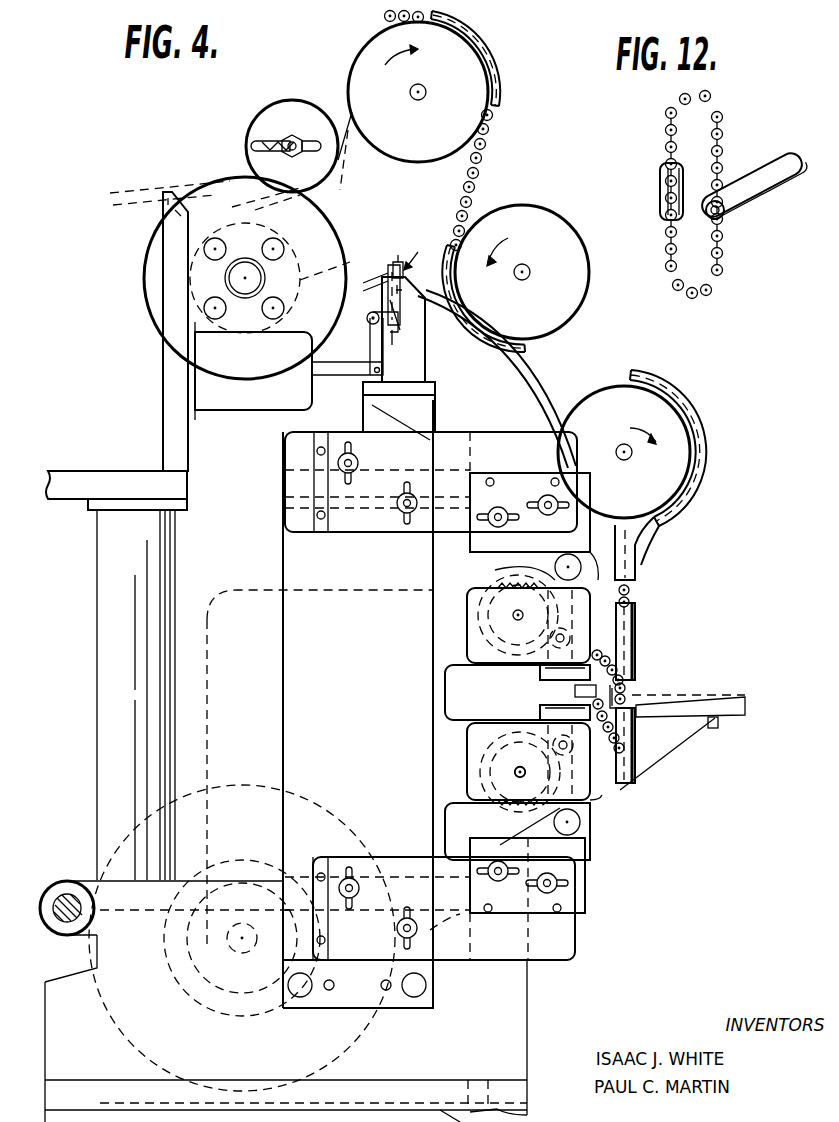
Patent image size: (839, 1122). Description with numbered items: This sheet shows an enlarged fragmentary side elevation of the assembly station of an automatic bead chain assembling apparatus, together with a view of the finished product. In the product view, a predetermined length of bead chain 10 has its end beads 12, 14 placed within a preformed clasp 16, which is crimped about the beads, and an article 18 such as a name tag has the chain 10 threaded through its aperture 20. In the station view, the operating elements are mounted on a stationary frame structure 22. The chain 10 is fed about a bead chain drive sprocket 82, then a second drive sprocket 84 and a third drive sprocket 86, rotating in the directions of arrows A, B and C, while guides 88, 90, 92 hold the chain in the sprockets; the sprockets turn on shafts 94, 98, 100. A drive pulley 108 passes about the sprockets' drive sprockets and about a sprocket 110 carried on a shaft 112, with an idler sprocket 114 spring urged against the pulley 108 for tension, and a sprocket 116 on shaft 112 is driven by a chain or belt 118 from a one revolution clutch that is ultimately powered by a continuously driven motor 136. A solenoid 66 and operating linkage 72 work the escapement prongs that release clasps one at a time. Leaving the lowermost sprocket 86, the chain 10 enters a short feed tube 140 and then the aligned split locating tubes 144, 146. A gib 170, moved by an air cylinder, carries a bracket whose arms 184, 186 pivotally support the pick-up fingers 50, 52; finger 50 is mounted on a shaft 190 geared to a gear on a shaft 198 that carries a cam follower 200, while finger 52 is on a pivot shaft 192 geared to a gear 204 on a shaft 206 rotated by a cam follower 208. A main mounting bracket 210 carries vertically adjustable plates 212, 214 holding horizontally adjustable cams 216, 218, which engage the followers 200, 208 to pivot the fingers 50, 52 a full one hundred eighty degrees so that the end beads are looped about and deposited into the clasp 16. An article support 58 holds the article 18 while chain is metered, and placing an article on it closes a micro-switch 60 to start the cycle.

In FIG. 4, the bead chain 10 is at (479, 166).
In FIG. 12, the bead chain 10 is at (722, 112).
In FIG. 12, the end bead 12 is at (660, 182).
In FIG. 12, the end bead 14 is at (660, 195).
In FIG. 12, the clasp 16 is at (684, 172).
In FIG. 4, the article 18 is at (690, 690).
In FIG. 12, the article 18 is at (762, 198).
In FIG. 12, the aperture 20 is at (720, 218).
In FIG. 4, the stationary frame structure 22 is at (100, 468).
In FIG. 4, the pick-up finger 50 is at (545, 680).
In FIG. 4, the pick-up finger 52 is at (545, 713).
In FIG. 4, the article support 58 is at (742, 718).
In FIG. 4, the micro-switch 60 is at (612, 742).
In FIG. 4, the solenoid 66 is at (248, 410).
In FIG. 4, the operating linkage 72 is at (387, 302).
In FIG. 4, the bead chain drive sprocket 82 is at (405, 162).
In FIG. 4, the second drive sprocket 84 is at (590, 306).
In FIG. 4, the third drive sprocket 86 is at (560, 408).
In FIG. 4, the guide 88 is at (500, 76).
In FIG. 4, the guide 90 is at (524, 348).
In FIG. 4, the guide 92 is at (701, 423).
In FIG. 4, the shaft 94 is at (413, 100).
In FIG. 4, the shaft 98 is at (524, 280).
In FIG. 4, the shaft 100 is at (624, 456).
In FIG. 4, the drive pulley 108 is at (359, 394).
In FIG. 4, the sprocket 110 is at (340, 262).
In FIG. 4, the shaft 112 is at (266, 276).
In FIG. 4, the idler sprocket 114 is at (284, 104).
In FIG. 4, the sprocket 116 is at (148, 256).
In FIG. 4, the chain or belt 118 is at (137, 188).
In FIG. 4, the motor 136 is at (331, 804).
In FIG. 4, the feed tube 140 is at (640, 560).
In FIG. 4, the locating bead chain tube 144 is at (639, 644).
In FIG. 4, the locating bead chain tube 146 is at (643, 762).
In FIG. 4, the gib 170 is at (453, 920).
In FIG. 4, the arm 184 is at (632, 600).
In FIG. 4, the arm 186 is at (594, 802).
In FIG. 4, the shaft 190 is at (550, 636).
In FIG. 4, the pivot shaft 192 is at (545, 775).
In FIG. 4, the shaft 198 is at (520, 610).
In FIG. 4, the cam follower 200 is at (542, 562).
In FIG. 4, the gear 204 is at (515, 816).
In FIG. 4, the shaft 206 is at (518, 772).
In FIG. 4, the cam follower 208 is at (588, 830).
In FIG. 4, the main mounting bracket 210 is at (283, 664).
In FIG. 4, the vertically adjustable plate 212 is at (378, 534).
In FIG. 4, the vertically adjustable plate 214 is at (372, 854).
In FIG. 4, the cam 216 is at (470, 542).
In FIG. 4, the cam 218 is at (590, 902).